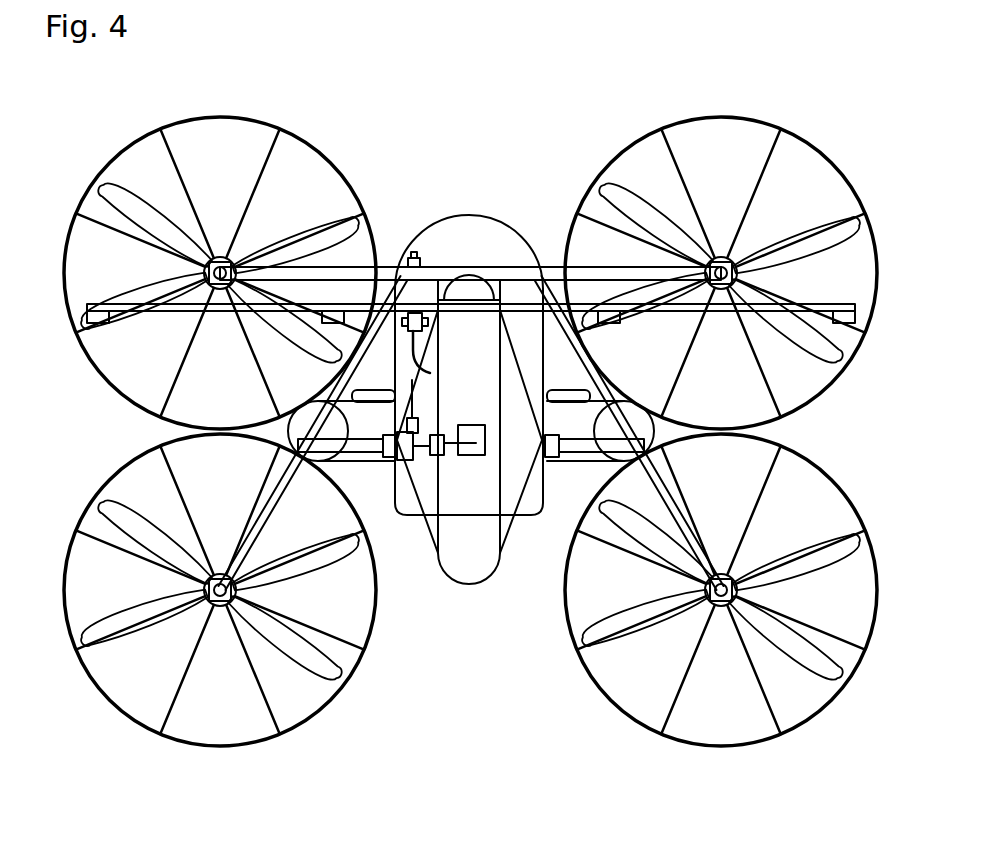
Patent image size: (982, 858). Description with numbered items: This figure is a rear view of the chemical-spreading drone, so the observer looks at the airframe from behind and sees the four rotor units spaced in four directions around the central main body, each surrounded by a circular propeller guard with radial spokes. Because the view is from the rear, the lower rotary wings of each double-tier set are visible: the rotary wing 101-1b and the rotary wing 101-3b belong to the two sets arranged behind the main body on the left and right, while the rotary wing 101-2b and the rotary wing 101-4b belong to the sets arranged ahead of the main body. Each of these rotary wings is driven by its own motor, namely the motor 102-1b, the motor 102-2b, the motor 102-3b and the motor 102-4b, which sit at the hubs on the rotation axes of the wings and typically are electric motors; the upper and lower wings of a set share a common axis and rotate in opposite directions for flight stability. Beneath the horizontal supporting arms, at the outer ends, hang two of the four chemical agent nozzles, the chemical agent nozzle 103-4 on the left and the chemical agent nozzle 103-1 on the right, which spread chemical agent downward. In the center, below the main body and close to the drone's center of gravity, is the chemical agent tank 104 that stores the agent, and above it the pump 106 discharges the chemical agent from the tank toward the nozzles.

The rotary wing 101-1b is at (634, 615).
The rotary wing 101-2b is at (815, 247).
The rotary wing 101-3b is at (130, 615).
The rotary wing 101-4b is at (318, 248).
The motor 102-1b is at (721, 606).
The motor 102-2b is at (721, 257).
The motor 102-3b is at (218, 606).
The motor 102-4b is at (220, 257).
The chemical agent nozzle 103-1 is at (845, 323).
The chemical agent nozzle 103-4 is at (92, 323).
The chemical agent tank 104 is at (508, 515).
The pump 106 is at (457, 328).